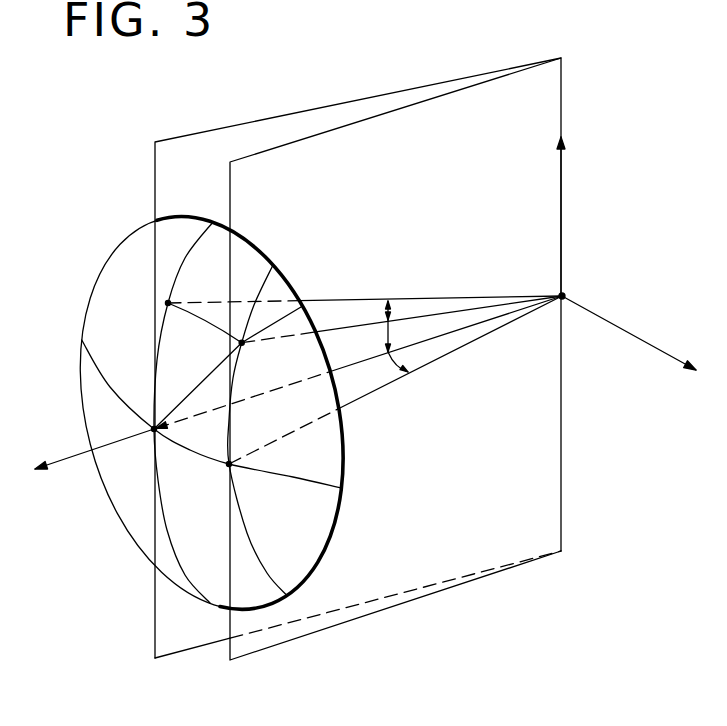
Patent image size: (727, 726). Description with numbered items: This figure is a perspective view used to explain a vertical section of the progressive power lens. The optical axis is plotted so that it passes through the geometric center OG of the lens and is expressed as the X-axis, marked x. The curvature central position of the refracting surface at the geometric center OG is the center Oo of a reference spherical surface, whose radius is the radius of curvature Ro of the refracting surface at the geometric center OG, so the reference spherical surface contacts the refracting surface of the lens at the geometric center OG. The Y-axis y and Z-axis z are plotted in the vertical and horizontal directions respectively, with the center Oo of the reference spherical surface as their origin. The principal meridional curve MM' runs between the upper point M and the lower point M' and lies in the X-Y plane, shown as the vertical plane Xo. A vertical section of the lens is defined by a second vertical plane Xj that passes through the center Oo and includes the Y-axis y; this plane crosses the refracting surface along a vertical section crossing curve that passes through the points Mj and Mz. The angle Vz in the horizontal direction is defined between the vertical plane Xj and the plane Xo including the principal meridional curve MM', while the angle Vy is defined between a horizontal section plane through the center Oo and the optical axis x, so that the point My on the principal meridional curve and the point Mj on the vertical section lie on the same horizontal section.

The vertical plane including the principal meridional curve Xo is at (358, 358).
The vertical section plane Xj is at (395, 359).
The upper end of principal meridional curve M is at (213, 207).
The lower end of principal meridional curve M' is at (200, 624).
The point on the principal meridional curve My is at (166, 303).
The point on the vertical section crossing curve Mj is at (244, 344).
The point on the vertical section crossing curve on the horizontal plane Mz is at (233, 467).
The geometric center OG is at (150, 433).
The center of the reference spherical surface Oo is at (565, 294).
The radius of curvature Ro is at (359, 362).
The angle in the vertical direction Vy is at (385, 320).
The angle in the horizontal direction Vz is at (400, 372).
The X-axis x is at (94, 467).
The Y-axis y is at (573, 215).
The Z-axis z is at (629, 348).